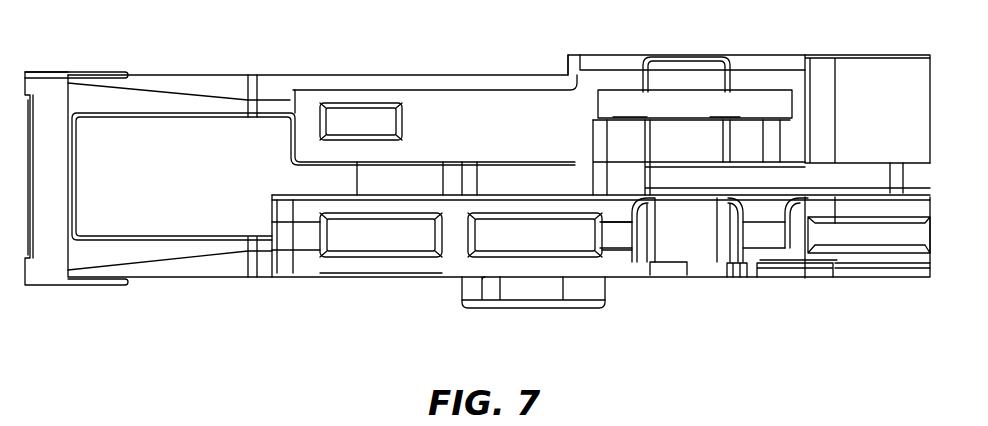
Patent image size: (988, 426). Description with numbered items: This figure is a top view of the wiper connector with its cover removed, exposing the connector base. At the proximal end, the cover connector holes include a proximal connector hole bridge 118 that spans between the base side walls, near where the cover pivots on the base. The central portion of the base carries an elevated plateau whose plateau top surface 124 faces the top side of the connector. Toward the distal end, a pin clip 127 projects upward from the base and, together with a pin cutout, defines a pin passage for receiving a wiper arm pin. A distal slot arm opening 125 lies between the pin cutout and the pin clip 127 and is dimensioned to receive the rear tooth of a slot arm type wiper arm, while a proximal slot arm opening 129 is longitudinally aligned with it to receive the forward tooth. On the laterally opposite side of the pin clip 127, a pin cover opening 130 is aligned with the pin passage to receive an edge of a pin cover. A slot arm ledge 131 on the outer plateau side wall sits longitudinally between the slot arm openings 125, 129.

The proximal connector hole bridge 118 is at (45, 232).
The plateau top surface 124 is at (380, 262).
The distal slot arm opening 125 is at (663, 177).
The pin clip 127 is at (663, 150).
The proximal slot arm opening 129 is at (403, 180).
The pin cover opening 130 is at (722, 102).
The slot arm ledge 131 is at (527, 290).